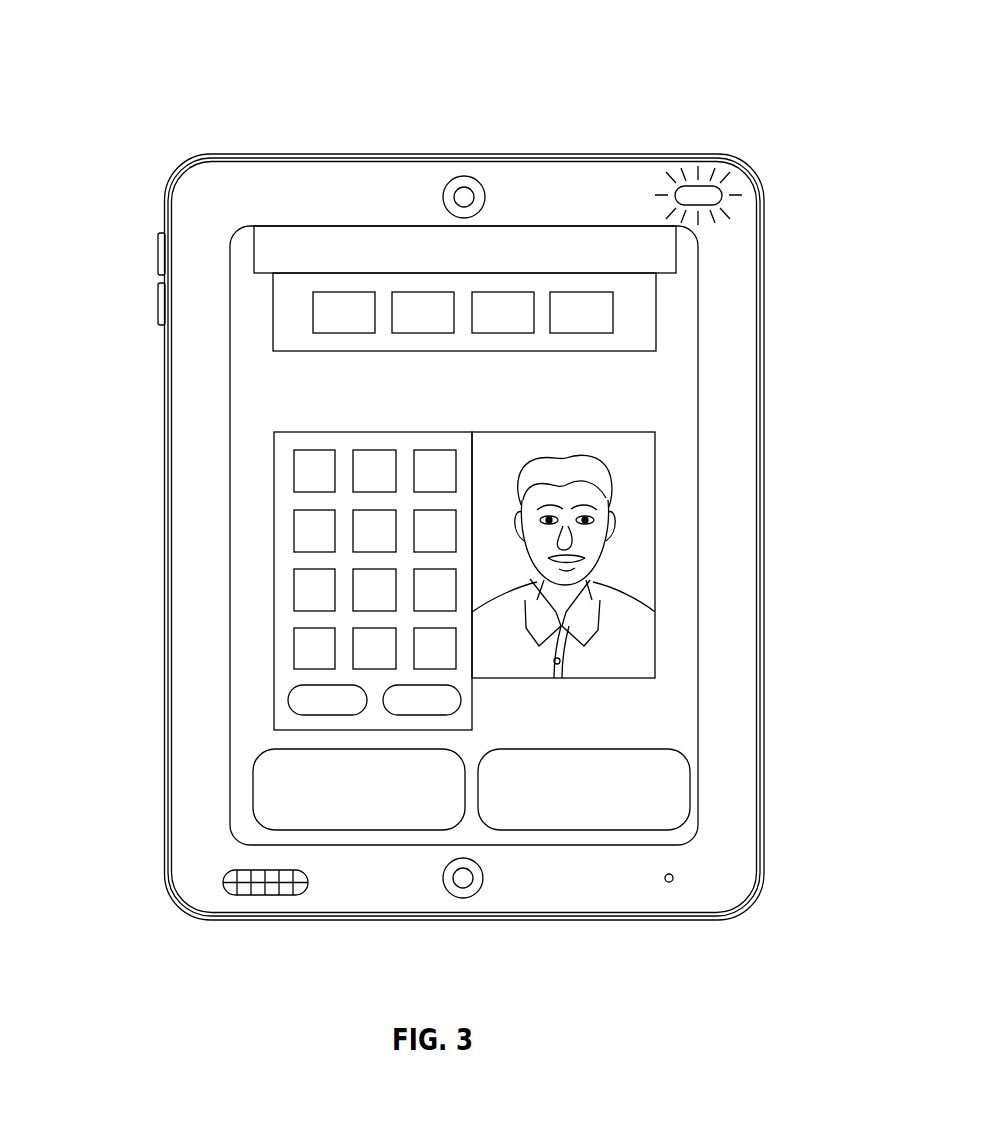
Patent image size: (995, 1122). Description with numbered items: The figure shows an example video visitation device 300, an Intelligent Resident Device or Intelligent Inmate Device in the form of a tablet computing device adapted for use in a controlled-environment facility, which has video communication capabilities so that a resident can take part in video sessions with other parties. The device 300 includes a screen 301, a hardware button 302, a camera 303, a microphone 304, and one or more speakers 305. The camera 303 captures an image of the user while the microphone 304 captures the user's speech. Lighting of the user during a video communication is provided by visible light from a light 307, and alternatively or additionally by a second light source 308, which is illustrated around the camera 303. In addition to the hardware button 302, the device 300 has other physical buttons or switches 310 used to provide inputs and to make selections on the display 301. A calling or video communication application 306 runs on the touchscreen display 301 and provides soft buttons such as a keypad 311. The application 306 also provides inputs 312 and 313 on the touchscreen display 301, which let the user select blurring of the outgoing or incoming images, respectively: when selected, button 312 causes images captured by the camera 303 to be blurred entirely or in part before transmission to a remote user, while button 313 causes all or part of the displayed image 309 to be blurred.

The video visitation device 300 is at (733, 56).
The screen 301 is at (375, 845).
The hardware button 302 is at (483, 884).
The camera 303 is at (485, 198).
The microphone 304 is at (674, 878).
The speaker 305 is at (268, 896).
The calling or video communication application 306 is at (404, 416).
The light 307 is at (692, 178).
The second light source 308 is at (443, 201).
The displayed image 309 is at (626, 665).
The physical buttons or switches 310 is at (152, 275).
The keypad 311 is at (283, 710).
The input for blurring outgoing image 312 is at (258, 820).
The input for blurring incoming image 313 is at (685, 785).